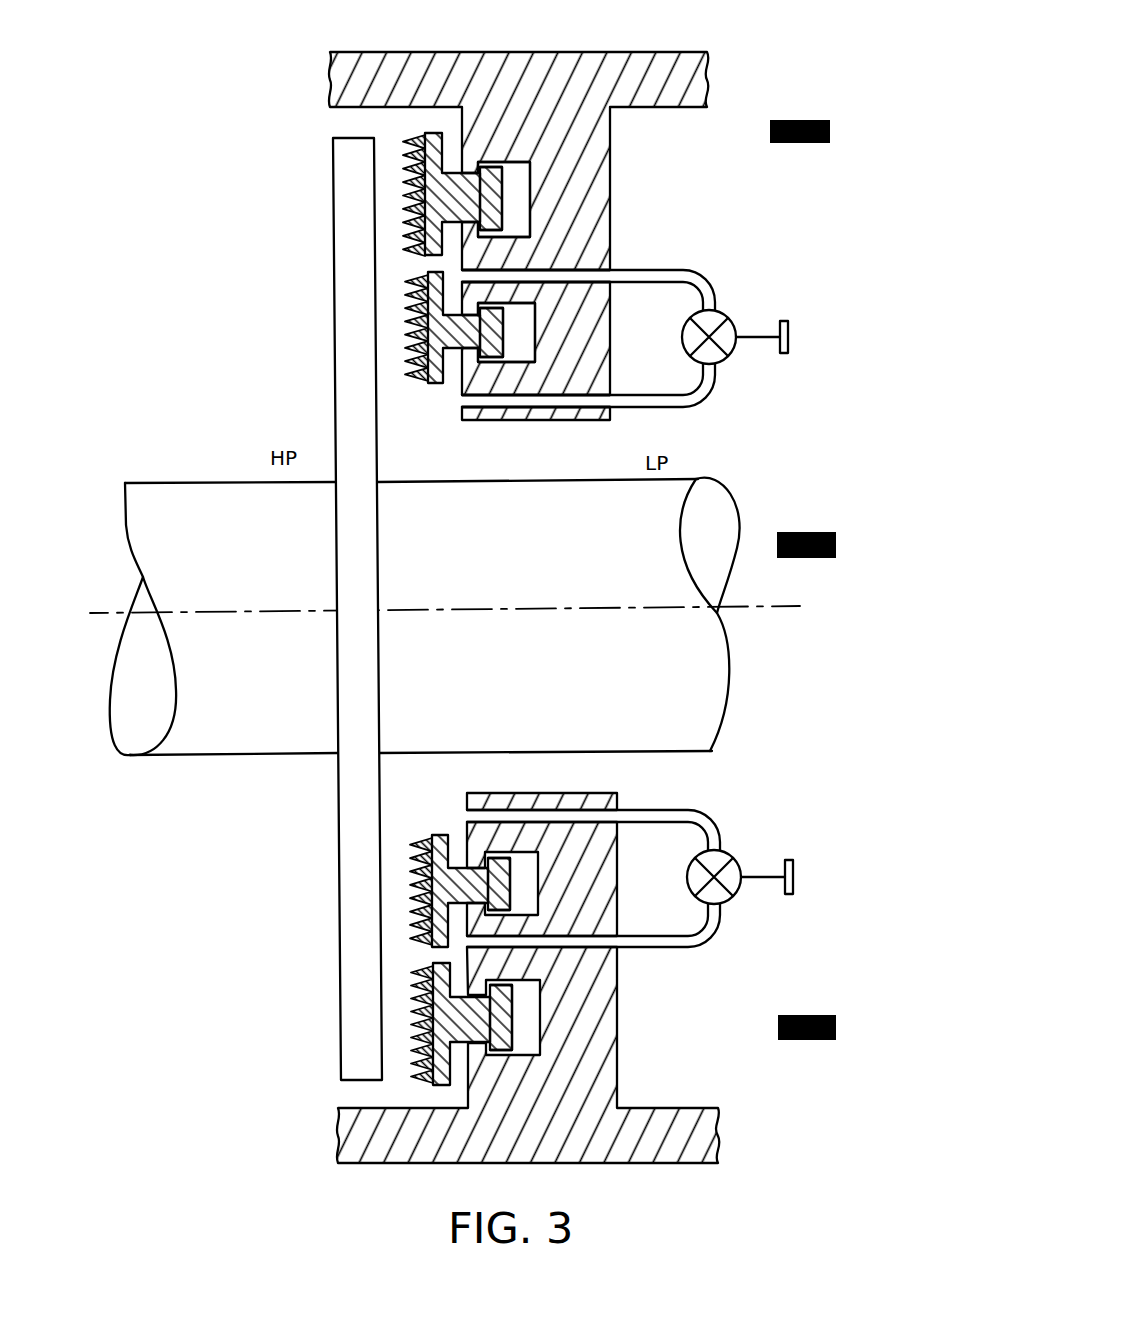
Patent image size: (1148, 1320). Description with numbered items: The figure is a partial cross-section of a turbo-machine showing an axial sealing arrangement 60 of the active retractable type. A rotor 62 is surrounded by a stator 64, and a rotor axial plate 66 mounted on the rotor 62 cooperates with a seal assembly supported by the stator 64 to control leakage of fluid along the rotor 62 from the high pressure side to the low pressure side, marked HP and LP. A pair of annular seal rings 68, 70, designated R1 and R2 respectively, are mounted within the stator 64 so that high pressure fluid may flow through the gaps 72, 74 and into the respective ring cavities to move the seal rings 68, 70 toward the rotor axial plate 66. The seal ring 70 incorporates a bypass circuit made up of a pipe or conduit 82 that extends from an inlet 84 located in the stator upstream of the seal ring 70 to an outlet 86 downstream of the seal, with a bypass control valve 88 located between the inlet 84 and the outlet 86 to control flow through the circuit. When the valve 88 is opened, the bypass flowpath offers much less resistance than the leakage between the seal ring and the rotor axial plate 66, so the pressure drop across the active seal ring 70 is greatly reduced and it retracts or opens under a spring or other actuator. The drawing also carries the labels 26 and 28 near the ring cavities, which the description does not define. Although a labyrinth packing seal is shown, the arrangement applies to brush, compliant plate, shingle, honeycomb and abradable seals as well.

The axial sealing arrangement 60 is at (248, 108).
The rotor 62 is at (174, 500).
The stator 64 is at (637, 67).
The rotor axial plate 66 is at (345, 358).
The seal ring 68 is at (498, 170).
The seal ring 70 is at (481, 350).
The gap 72 is at (445, 219).
The gap 74 is at (457, 354).
The pipe or conduit 82 is at (640, 276).
The inlet 84 is at (475, 402).
The outlet 86 is at (462, 269).
The bypass control valve 88 is at (732, 331).
The first chamber 26 is at (495, 204).
The second chamber 28 is at (520, 319).
The seal ring designation R1 is at (517, 188).
The seal ring designation R2 is at (497, 332).